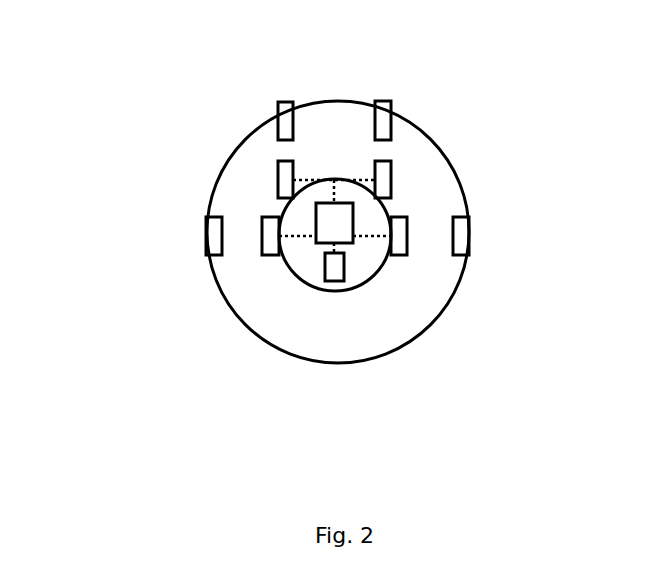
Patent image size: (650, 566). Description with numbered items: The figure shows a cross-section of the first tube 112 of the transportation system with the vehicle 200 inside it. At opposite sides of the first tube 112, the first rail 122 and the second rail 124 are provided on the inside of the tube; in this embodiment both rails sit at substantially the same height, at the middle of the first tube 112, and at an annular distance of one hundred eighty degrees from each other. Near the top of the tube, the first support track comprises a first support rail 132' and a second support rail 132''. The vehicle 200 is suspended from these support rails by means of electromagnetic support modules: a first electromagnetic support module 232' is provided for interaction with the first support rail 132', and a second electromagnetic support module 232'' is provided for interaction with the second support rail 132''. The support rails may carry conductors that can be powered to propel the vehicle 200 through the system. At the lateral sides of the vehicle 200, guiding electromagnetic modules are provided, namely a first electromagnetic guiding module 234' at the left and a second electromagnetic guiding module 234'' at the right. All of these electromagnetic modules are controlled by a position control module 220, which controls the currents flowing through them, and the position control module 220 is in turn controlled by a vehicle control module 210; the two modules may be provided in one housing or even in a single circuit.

The first tube 112 is at (427, 333).
The first rail 122 is at (217, 233).
The second rail 124 is at (462, 233).
The first support rail 132' is at (296, 81).
The second support rail 132'' is at (370, 81).
The vehicle 200 is at (358, 322).
The vehicle control module 210 is at (331, 281).
The position control module 220 is at (320, 243).
The first electromagnetic support module 232' is at (245, 110).
The second electromagnetic support module 232'' is at (431, 138).
The first electromagnetic guiding module 234' is at (198, 138).
The second electromagnetic guiding module 234'' is at (461, 110).